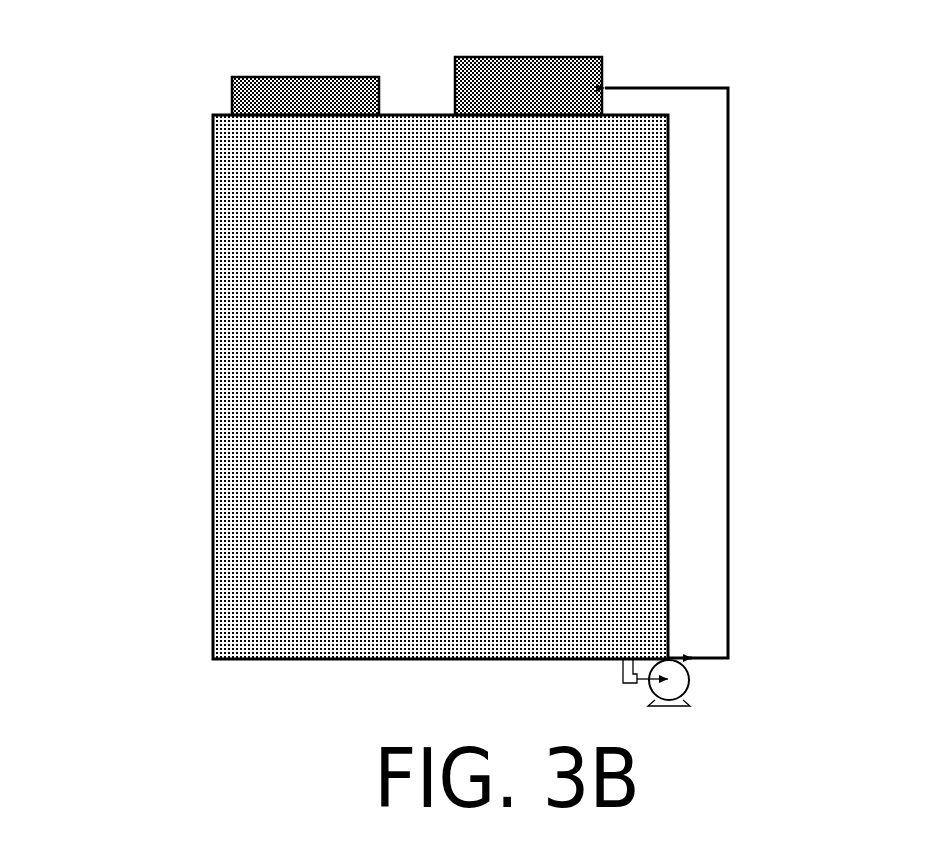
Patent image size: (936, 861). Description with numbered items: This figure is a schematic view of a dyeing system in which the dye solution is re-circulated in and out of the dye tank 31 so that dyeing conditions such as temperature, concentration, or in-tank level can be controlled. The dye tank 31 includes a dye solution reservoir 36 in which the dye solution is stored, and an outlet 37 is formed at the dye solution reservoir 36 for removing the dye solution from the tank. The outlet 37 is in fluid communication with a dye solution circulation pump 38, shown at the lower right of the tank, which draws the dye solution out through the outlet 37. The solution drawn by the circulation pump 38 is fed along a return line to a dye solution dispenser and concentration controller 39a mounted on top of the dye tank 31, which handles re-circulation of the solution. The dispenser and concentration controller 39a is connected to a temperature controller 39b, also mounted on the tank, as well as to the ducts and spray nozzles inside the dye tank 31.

The dye tank 31 is at (212, 295).
The dye solution reservoir 36 is at (213, 634).
The outlet 37 is at (617, 673).
The dye solution circulation pump 38 is at (690, 681).
The dye solution dispenser and concentration controller 39a is at (605, 73).
The temperature controller 39b is at (232, 93).